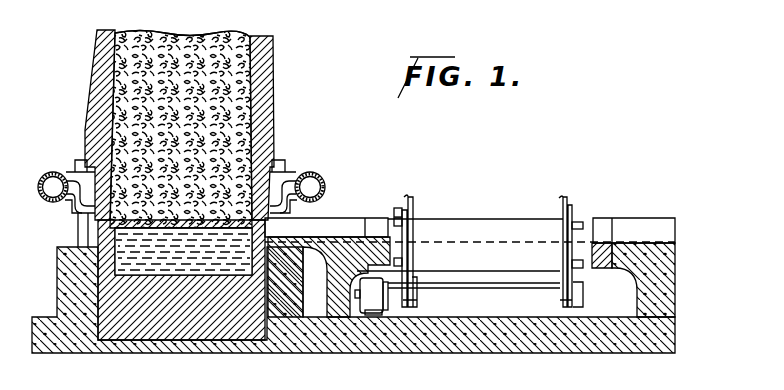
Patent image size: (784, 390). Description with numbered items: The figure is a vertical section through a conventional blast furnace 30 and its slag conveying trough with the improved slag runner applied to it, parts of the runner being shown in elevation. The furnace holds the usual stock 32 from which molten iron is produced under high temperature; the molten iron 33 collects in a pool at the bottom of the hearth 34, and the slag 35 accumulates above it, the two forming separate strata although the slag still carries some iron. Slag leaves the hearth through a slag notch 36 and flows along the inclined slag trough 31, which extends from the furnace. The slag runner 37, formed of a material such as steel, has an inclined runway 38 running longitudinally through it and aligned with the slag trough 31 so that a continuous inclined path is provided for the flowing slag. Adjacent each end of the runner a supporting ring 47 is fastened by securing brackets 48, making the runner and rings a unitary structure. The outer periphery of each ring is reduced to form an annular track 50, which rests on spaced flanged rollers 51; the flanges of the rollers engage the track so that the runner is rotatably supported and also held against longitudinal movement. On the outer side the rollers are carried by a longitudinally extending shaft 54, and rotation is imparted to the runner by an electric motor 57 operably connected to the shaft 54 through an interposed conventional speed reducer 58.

The blast furnace 30 is at (262, 84).
The slag trough 31 is at (341, 228).
The stock 32 is at (220, 48).
The molten iron 33 is at (110, 270).
The hearth 34 is at (112, 258).
The slag 35 is at (105, 232).
The slag notch 36 is at (304, 186).
The slag runner 37 is at (503, 226).
The runway 38 is at (606, 228).
The supporting ring 47 is at (410, 197).
The securing bracket 48 is at (395, 211).
The annular track 50 is at (590, 376).
The flanged roller 51 is at (417, 302).
The shaft 54 is at (521, 268).
The electric motor 57 is at (330, 325).
The speed reducer 58 is at (386, 302).